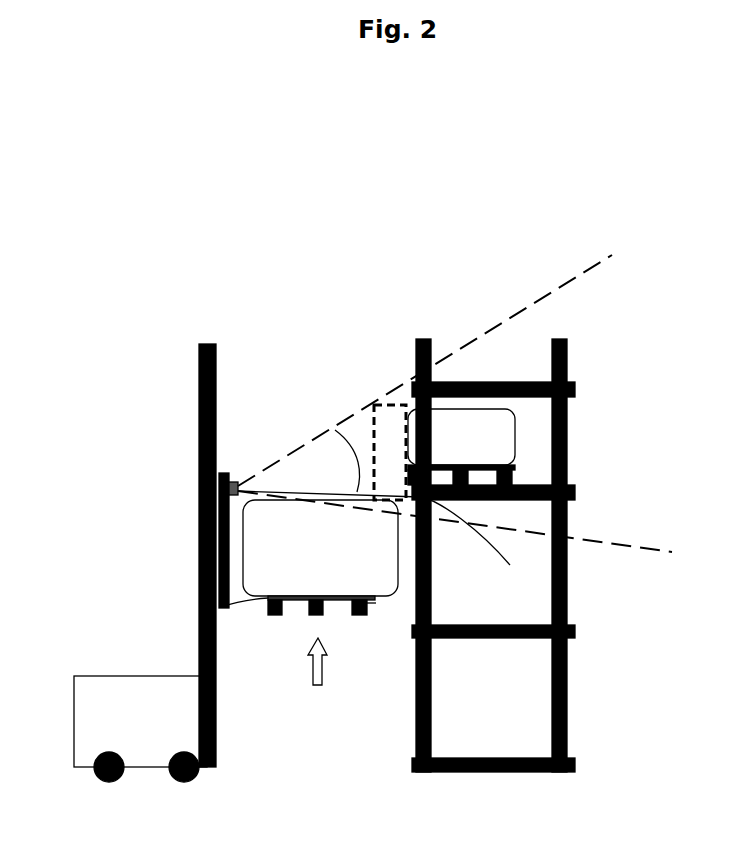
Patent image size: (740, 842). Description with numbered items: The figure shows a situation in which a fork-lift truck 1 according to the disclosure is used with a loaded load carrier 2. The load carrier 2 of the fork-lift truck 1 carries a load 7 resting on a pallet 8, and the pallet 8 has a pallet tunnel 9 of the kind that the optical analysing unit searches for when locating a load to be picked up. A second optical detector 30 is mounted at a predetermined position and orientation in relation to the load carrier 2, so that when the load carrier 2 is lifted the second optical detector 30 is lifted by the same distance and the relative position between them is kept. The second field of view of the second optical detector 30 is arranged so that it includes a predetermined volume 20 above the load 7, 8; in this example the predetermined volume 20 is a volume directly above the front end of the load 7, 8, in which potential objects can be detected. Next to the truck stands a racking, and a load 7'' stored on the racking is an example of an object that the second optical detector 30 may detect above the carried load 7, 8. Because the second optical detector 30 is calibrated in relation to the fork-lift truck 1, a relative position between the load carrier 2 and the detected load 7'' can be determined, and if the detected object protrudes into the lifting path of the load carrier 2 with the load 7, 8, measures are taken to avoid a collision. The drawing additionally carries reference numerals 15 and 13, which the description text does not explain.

The fork-lift truck 1 is at (98, 612).
The second optical detector 30 is at (233, 482).
The load 7 is at (320, 458).
The load on the racking 7'' is at (438, 394).
The pallet tunnel 9 is at (266, 613).
The pallet 8 is at (362, 607).
The load carrier 2 is at (373, 603).
The rack shelf beam 15 is at (452, 493).
The predetermined volume 20 is at (377, 405).
The measuring line of sight 13 is at (390, 507).